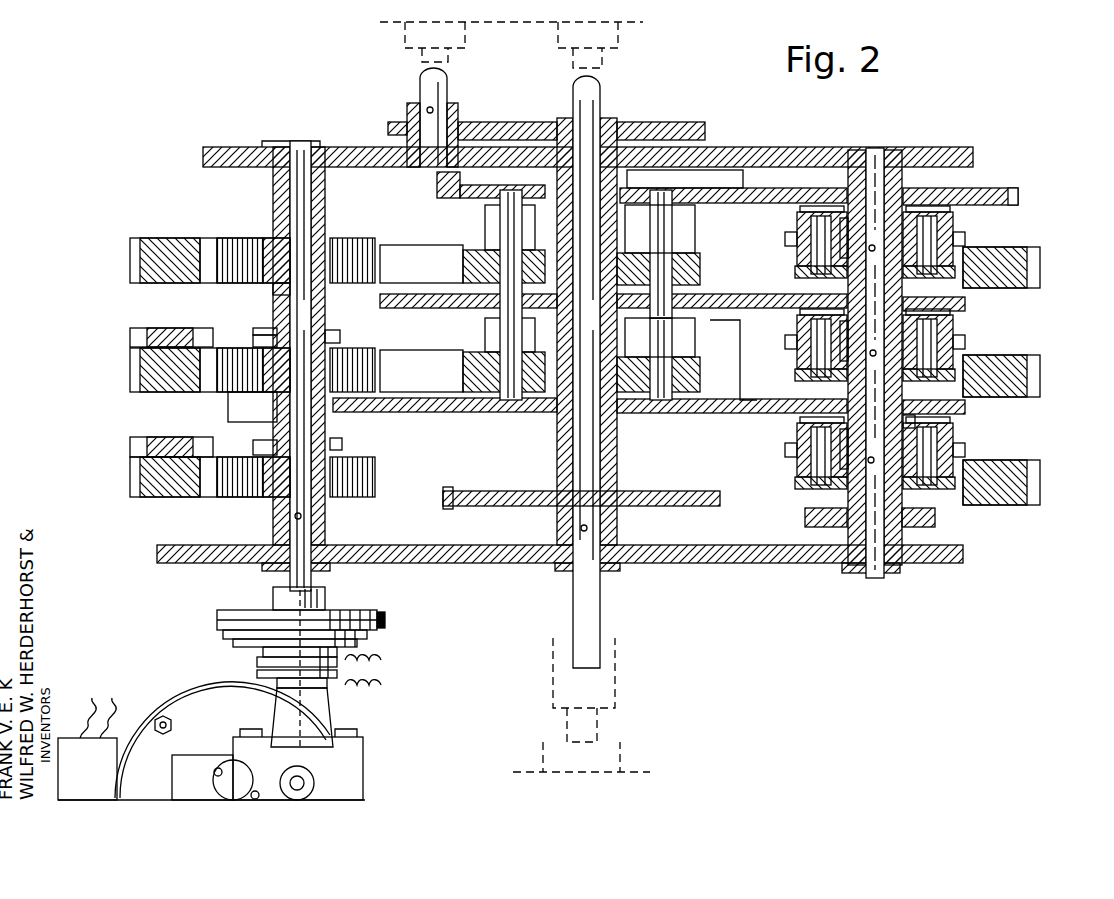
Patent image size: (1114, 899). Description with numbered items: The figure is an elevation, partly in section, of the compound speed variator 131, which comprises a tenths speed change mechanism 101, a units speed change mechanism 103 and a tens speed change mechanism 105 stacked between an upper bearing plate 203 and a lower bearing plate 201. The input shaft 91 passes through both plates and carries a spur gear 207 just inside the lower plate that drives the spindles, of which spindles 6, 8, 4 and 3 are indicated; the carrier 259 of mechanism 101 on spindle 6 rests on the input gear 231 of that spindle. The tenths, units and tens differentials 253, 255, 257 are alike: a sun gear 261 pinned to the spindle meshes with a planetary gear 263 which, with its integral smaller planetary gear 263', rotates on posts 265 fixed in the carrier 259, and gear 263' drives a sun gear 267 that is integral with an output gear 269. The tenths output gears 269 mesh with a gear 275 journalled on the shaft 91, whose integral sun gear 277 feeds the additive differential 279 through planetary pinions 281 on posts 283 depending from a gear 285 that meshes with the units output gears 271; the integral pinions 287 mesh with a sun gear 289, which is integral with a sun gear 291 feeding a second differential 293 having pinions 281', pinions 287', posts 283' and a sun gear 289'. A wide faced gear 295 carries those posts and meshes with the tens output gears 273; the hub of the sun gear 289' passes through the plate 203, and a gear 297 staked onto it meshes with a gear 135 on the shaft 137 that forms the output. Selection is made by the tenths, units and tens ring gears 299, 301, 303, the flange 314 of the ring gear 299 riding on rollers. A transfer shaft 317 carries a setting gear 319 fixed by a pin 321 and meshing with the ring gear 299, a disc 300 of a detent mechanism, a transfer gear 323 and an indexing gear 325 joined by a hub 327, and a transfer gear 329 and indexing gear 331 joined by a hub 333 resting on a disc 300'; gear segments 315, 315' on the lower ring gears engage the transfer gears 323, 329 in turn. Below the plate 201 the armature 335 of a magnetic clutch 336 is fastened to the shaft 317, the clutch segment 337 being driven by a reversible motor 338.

The spindle 3 is at (325, 429).
The spindle 4 is at (120, 503).
The spindle 6 is at (872, 148).
The spindle 8 is at (120, 168).
The input shaft 91 is at (582, 588).
The tenths speed change mechanism 101 is at (100, 456).
The units speed change mechanism 103 is at (127, 357).
The tens speed change mechanism 105 is at (127, 248).
The compound speed variator 131 is at (968, 132).
The gear 135 is at (412, 128).
The shaft 137 is at (425, 82).
The lower bearing plate 201 is at (742, 562).
The upper bearing plate 203 is at (926, 150).
The spur gear 207 is at (652, 508).
The input gear 231 is at (937, 522).
The tenths differentials 253 is at (965, 453).
The units differentials 255 is at (990, 334).
The tens differentials 257 is at (975, 216).
The carrier 259 is at (795, 276).
The sun gear 261 is at (800, 262).
The planetary gear 263 is at (876, 348).
The planetary gear 263' is at (884, 335).
The posts 265 is at (957, 250).
The sun gear 267 is at (905, 210).
The output gear 269 is at (905, 422).
The output gears 271 is at (965, 306).
The output gears 273 is at (995, 190).
The gear 275 is at (710, 412).
The sun gear 277 is at (560, 417).
The additive differential 279 is at (480, 343).
The planetary pinions 281 is at (558, 401).
The pinions 281' is at (474, 266).
The posts 283 is at (566, 320).
The posts 283' is at (673, 254).
The gear 285 is at (382, 299).
The planetary pinion 287 is at (485, 330).
The pinions 287' is at (466, 223).
The sun gear 289 is at (675, 337).
The sun gear 289' is at (671, 229).
The sun gear 291 is at (610, 333).
The second differential 293 is at (452, 229).
The wide faced gear 295 is at (438, 183).
The gear 297 is at (652, 122).
The tenths ring gear 299 is at (132, 477).
The disc 300 is at (367, 445).
The disc 300' is at (245, 329).
The units ring gear 301 is at (132, 372).
The tens ring gear 303 is at (132, 274).
The flange 314 is at (410, 473).
The gear segment 315 is at (158, 429).
The gear segment 315' is at (137, 327).
The transfer shaft 317 is at (258, 575).
The indexing or setting gear 319 is at (263, 488).
The pin 321 is at (295, 517).
The transfer gear 323 is at (262, 447).
The indexing gear 325 is at (332, 352).
The hub 327 is at (277, 413).
The transfer gear 329 is at (267, 328).
The indexing gear 331 is at (260, 240).
The hub 333 is at (283, 289).
The armature 335 is at (372, 612).
The magnetic clutch 336 is at (386, 617).
The segment 337 is at (365, 632).
The reversible motor 338 is at (187, 700).